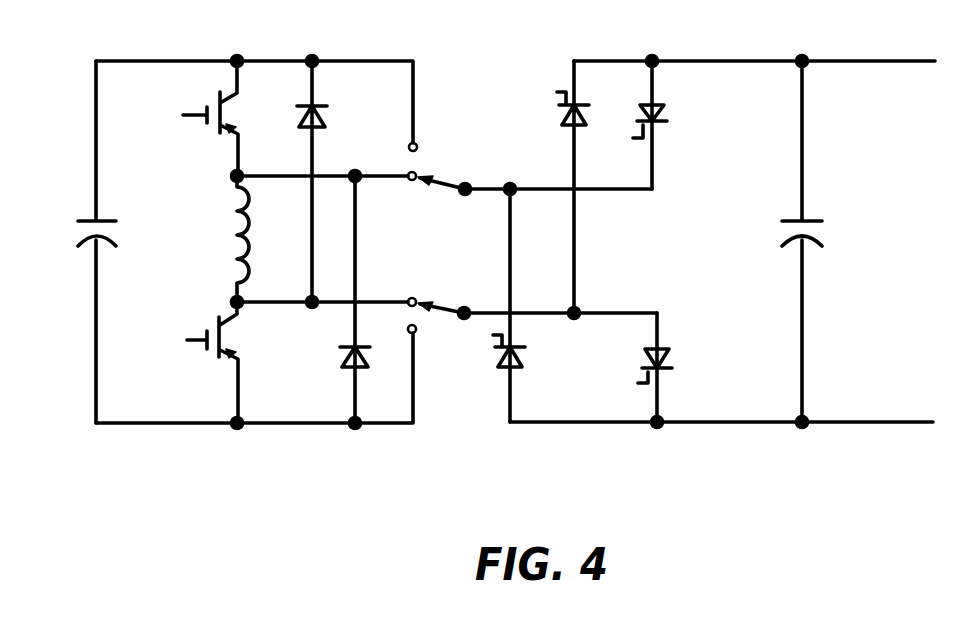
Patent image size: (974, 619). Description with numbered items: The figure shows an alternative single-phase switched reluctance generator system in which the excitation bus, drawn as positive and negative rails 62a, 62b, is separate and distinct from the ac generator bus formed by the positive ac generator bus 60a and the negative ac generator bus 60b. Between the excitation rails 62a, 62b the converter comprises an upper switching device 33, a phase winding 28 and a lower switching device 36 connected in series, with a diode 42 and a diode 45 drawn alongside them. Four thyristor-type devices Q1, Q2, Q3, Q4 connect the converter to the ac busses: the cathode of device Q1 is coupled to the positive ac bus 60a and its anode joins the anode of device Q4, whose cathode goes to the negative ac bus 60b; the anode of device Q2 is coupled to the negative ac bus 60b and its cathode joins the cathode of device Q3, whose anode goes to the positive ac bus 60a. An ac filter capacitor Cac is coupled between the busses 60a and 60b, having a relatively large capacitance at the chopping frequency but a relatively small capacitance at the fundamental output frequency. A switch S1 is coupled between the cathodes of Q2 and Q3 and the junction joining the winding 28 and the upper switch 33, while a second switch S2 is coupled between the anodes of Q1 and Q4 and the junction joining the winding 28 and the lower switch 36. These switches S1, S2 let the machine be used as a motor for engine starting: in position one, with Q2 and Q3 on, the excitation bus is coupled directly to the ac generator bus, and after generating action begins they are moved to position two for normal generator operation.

The excitation bus 62a is at (139, 60).
The excitation bus 62b is at (137, 425).
The upper switching device 33 is at (217, 97).
The lower switching device 36 is at (216, 320).
The phase winding 28 is at (240, 238).
The upper freewheeling diode 42 is at (320, 117).
The lower freewheeling diode 45 is at (347, 356).
The positive ac generator bus 60a is at (873, 46).
The negative ac generator bus 60b is at (878, 425).
The switch S1 is at (530, 173).
The second switch S2 is at (532, 295).
The thyristor-type device Q1 is at (564, 120).
The thyristor-type device Q2 is at (516, 356).
The thyristor-type device Q3 is at (661, 118).
The thyristor-type device Q4 is at (670, 358).
The ac filter capacitor Cac is at (826, 241).